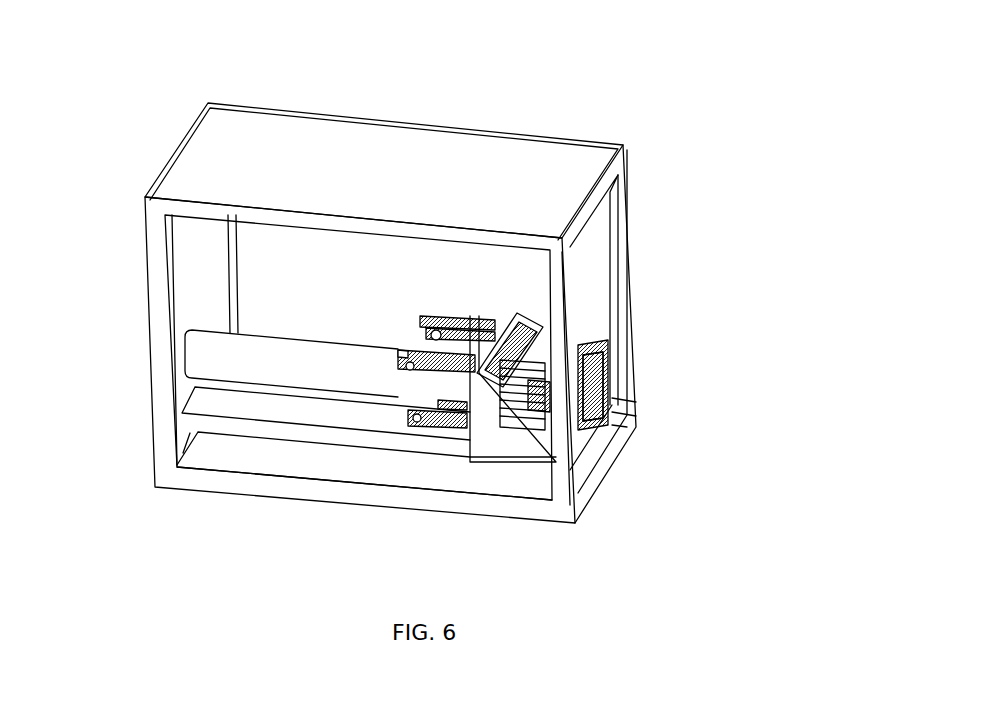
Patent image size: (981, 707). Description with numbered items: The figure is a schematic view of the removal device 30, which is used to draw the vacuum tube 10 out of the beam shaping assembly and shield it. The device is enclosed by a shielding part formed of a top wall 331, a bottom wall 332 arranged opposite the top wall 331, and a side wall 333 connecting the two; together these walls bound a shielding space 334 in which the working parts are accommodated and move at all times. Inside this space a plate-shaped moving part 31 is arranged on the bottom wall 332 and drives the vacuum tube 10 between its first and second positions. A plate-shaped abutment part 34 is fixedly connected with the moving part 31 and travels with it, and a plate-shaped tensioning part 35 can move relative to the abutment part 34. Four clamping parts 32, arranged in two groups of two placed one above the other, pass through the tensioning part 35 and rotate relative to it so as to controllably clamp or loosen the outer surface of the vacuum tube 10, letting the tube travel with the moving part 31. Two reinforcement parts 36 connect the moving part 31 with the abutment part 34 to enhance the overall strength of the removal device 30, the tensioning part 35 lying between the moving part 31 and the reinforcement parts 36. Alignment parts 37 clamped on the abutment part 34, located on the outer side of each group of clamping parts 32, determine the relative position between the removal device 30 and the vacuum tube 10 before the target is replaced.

The removal device 30 is at (610, 97).
The top wall 331 is at (502, 170).
The side wall 333 is at (595, 265).
The shielding space 334 is at (312, 267).
The bottom wall 332 is at (370, 468).
The abutment part 34 is at (470, 453).
The vacuum tube 10 is at (325, 367).
The alignment part 37 is at (420, 316).
The clamping part 32 is at (430, 333).
The reinforcement part 36 is at (523, 448).
The tensioning part 35 is at (535, 318).
The moving part 31 is at (548, 460).